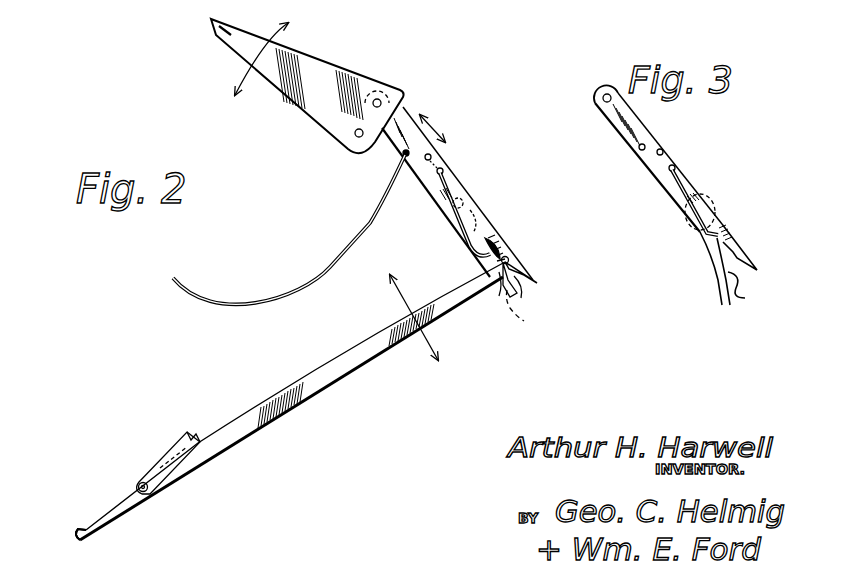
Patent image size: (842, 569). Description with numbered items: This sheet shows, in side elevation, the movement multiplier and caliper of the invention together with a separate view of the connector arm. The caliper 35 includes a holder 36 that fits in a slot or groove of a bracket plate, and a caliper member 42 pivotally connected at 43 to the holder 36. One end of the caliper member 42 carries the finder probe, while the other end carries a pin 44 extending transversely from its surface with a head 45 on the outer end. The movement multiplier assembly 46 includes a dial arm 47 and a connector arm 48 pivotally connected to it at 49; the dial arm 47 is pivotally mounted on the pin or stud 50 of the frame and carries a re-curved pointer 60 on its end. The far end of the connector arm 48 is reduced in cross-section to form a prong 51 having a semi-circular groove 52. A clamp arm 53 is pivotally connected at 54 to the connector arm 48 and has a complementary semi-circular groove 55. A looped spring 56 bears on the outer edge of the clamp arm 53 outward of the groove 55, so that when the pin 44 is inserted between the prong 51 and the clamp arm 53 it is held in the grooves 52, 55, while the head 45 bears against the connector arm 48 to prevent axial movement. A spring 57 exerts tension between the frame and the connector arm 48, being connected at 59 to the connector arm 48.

In FIG. 2, the caliper 35 is at (175, 448).
In FIG. 2, the holder 36 is at (167, 455).
In FIG. 2, the caliper member 42 is at (120, 522).
In FIG. 2, the pivotal connection 43 is at (138, 488).
In FIG. 2, the pin 44 is at (513, 257).
In FIG. 2, the head 45 is at (527, 314).
In FIG. 2, the movement multiplier assembly 46 is at (454, 168).
In FIG. 2, the dial arm 47 is at (313, 67).
In FIG. 2, the connector arm 48 is at (457, 187).
In FIG. 3, the connector arm 48 is at (622, 128).
In FIG. 2, the pivotal connection 49 is at (382, 98).
In FIG. 3, the pivotal connection 49 is at (607, 93).
In FIG. 2, the pin or stud 50 is at (355, 133).
In FIG. 2, the prong 51 is at (505, 242).
In FIG. 2, the semi-circular groove 52 is at (512, 262).
In FIG. 3, the semi-circular groove 52 is at (740, 235).
In FIG. 2, the clamp arm 53 is at (521, 291).
In FIG. 3, the clamp arm 53 is at (695, 243).
In FIG. 2, the pivotal connection 54 is at (464, 201).
In FIG. 3, the pivotal connection 54 is at (683, 208).
In FIG. 2, the semi-circular groove 55 is at (490, 287).
In FIG. 3, the semi-circular groove 55 is at (745, 293).
In FIG. 2, the looped spring 56 is at (478, 226).
In FIG. 3, the looped spring 56 is at (675, 183).
In FIG. 2, the spring 57 is at (317, 278).
In FIG. 3, the spring 57 is at (675, 165).
In FIG. 3, the spring connection 59 is at (636, 151).
In FIG. 2, the re-curved pointer 60 is at (222, 34).